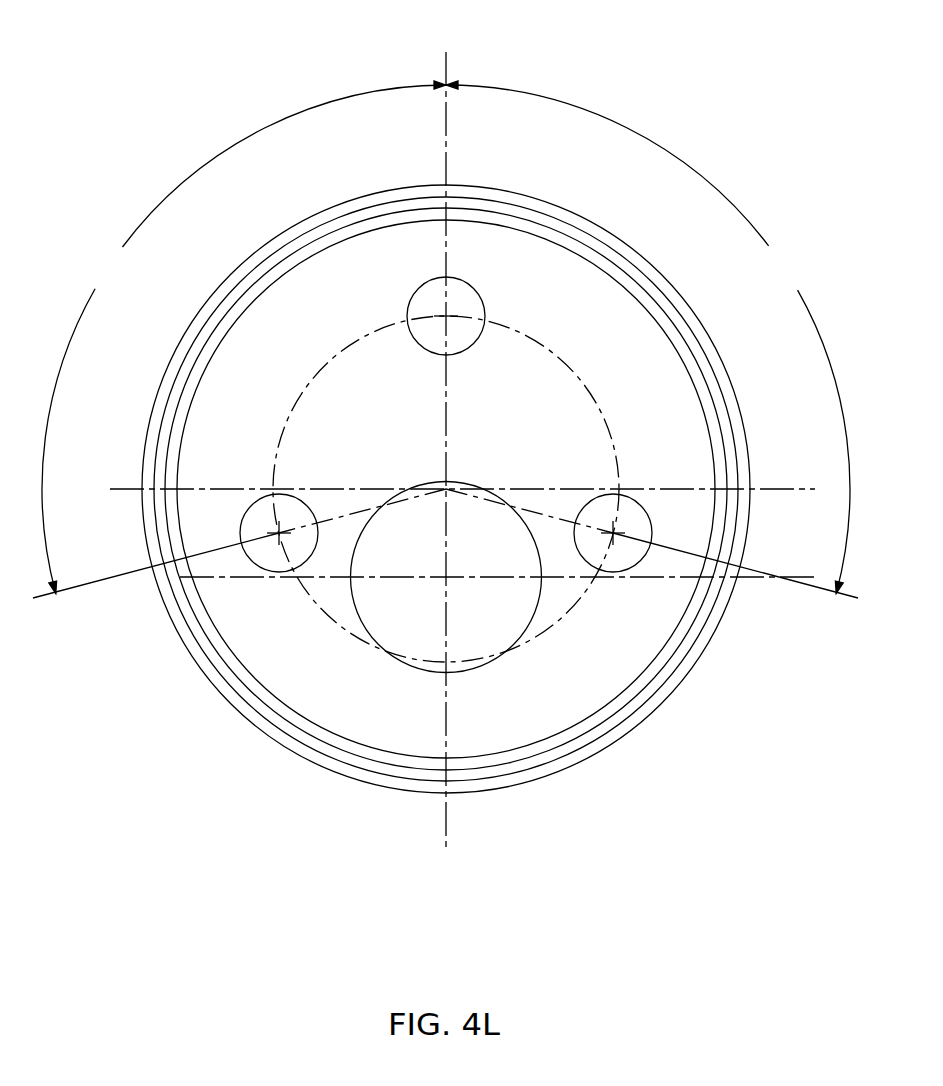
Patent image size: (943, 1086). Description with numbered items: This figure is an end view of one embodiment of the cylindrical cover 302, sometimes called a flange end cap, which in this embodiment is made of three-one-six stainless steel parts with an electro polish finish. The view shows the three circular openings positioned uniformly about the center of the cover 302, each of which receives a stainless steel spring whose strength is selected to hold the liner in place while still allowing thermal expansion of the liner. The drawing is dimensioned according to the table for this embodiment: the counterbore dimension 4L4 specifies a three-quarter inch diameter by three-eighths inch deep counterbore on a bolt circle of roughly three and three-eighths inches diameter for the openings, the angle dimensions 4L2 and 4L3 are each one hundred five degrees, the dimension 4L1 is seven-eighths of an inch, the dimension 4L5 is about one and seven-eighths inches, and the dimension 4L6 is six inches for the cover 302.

The cylindrical cover 302 is at (614, 86).
The dimension 4L1 is at (799, 489).
The angle dimension 4L2 is at (652, 339).
The angle dimension 4L3 is at (239, 339).
The counterbore dimension 4L4 is at (257, 570).
The dimension 4L5 is at (493, 686).
The dimension 4L6 is at (451, 495).